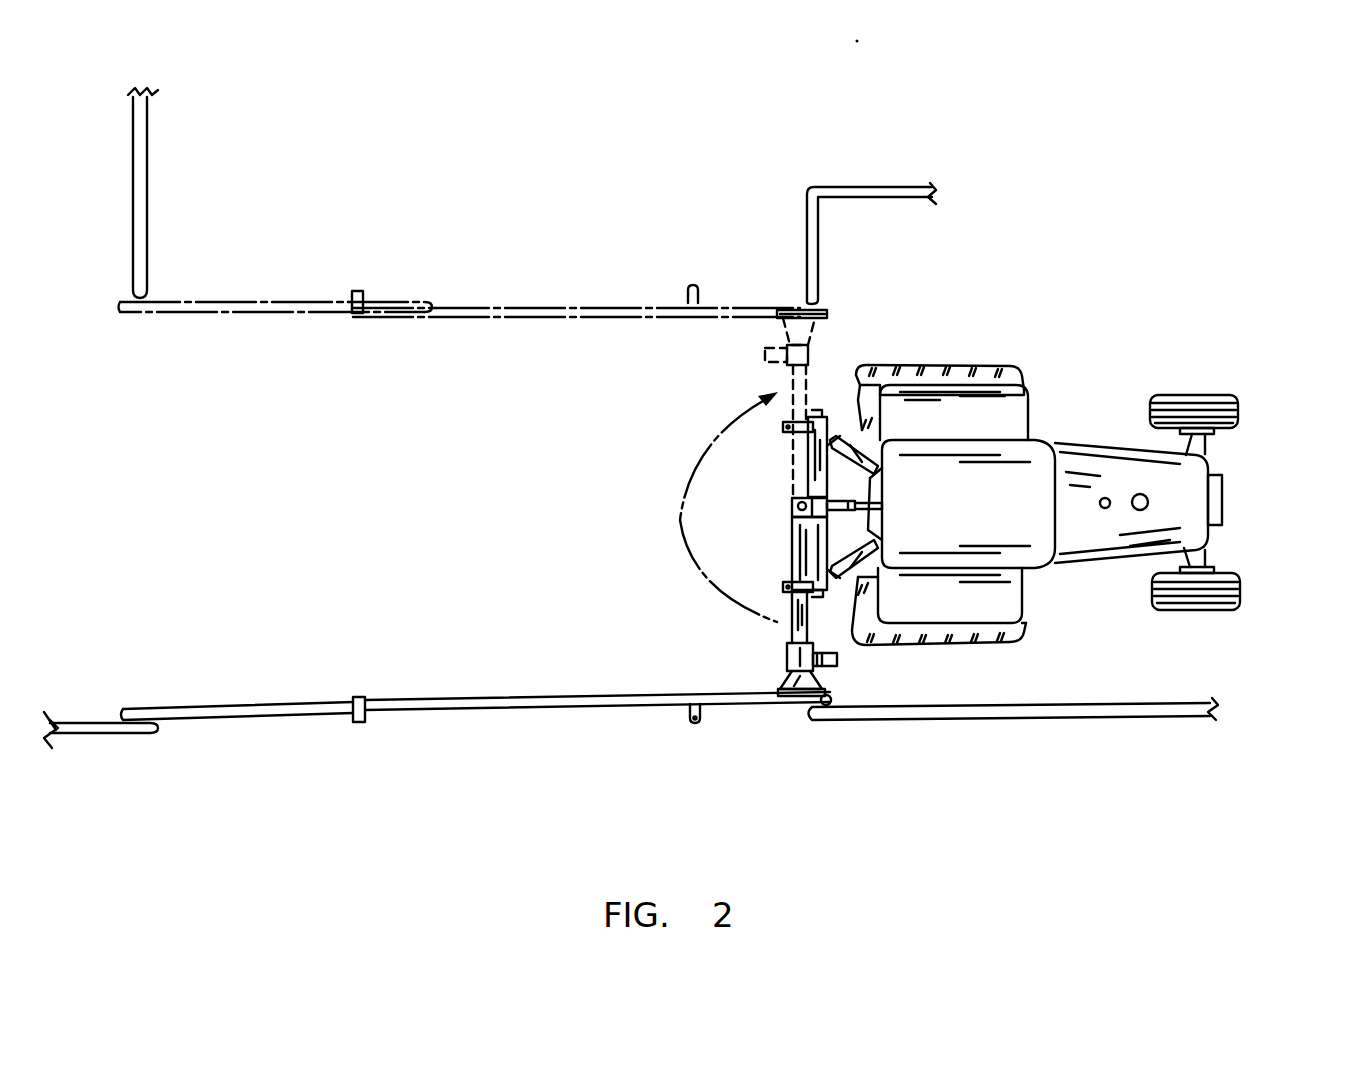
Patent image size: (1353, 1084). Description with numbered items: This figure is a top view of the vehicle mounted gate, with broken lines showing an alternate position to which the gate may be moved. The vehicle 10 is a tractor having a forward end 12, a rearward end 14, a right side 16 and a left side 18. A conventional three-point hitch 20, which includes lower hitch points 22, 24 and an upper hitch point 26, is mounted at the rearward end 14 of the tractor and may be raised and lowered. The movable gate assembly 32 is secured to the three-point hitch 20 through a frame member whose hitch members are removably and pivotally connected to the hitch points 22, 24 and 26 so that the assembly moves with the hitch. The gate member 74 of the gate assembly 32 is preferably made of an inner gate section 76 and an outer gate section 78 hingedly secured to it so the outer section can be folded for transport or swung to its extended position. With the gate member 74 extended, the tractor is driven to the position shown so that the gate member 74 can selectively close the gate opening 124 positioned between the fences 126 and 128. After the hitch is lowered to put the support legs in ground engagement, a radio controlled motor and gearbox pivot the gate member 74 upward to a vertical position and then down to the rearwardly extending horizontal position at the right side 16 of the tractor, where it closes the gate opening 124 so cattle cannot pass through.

The vehicle 10 is at (1089, 468).
The forward end 12 is at (1250, 500).
The rearward end 14 is at (893, 450).
The right side 16 is at (1047, 600).
The left side 18 is at (1030, 356).
The three-point hitch 20 is at (761, 507).
The lower hitch point 22 is at (865, 572).
The lower hitch point 24 is at (860, 458).
The upper hitch point 26 is at (858, 506).
The movable gate assembly 32 is at (782, 550).
The gate member 74 is at (501, 296).
The inner gate section 76 is at (587, 318).
The outer gate section 78 is at (307, 312).
The gate opening 124 is at (742, 715).
The fence 126 is at (930, 715).
The fence 128 is at (113, 727).